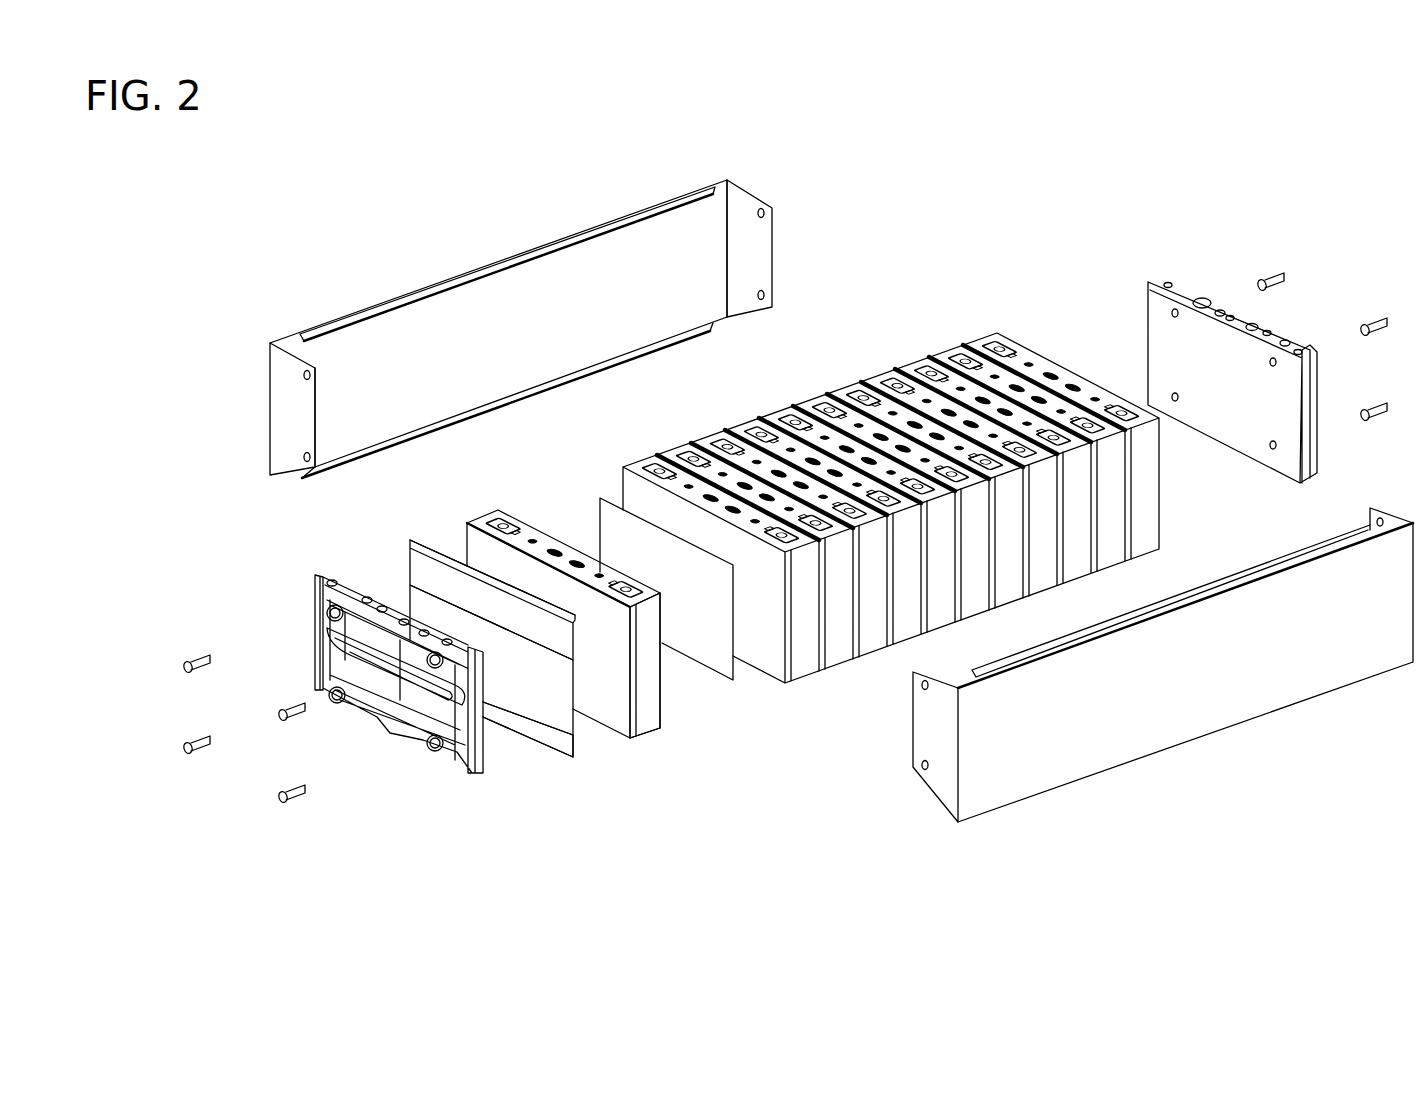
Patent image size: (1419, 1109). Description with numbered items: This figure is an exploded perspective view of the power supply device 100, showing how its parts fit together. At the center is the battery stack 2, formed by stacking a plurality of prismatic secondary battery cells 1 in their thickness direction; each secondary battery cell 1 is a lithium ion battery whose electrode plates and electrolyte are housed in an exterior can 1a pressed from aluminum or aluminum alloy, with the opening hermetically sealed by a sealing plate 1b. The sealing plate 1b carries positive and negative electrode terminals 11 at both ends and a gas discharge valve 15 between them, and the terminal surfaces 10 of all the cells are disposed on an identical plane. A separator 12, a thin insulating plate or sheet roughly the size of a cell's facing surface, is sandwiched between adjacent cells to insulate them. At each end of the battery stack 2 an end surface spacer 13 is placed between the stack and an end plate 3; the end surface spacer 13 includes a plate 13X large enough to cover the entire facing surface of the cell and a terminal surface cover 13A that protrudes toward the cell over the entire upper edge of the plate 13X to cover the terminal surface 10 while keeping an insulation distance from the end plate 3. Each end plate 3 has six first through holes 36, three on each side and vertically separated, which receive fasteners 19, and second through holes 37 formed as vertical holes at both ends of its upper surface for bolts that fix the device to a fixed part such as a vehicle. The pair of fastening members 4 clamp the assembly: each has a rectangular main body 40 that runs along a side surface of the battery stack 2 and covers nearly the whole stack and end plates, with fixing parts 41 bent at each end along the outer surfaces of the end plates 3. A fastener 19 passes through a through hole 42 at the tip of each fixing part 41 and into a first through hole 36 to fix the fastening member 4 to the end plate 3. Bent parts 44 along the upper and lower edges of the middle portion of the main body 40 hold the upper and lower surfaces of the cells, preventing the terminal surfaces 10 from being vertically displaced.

The power supply device 100 is at (344, 237).
The secondary battery cell 1 is at (1210, 508).
The exterior can 1a is at (1147, 482).
The sealing plate 1b is at (1148, 393).
The battery stack 2 is at (966, 318).
The end plate 3 is at (288, 576).
The fastening member 4 is at (785, 202).
The terminal surface 10 is at (1044, 352).
The electrode terminal 11 is at (1007, 332).
The separator 12 is at (700, 652).
The end surface spacer 13 is at (544, 762).
The terminal surface cover 13A is at (525, 643).
The plate 13X is at (507, 698).
The gas discharge valve 15 is at (1053, 377).
The fastener 19 is at (192, 668).
The first through hole 36 is at (328, 613).
The second through hole 37 is at (341, 570).
The main body 40 is at (545, 310).
The fixing part 41 is at (762, 255).
The through hole 42 is at (296, 364).
The bent part 44 is at (420, 280).